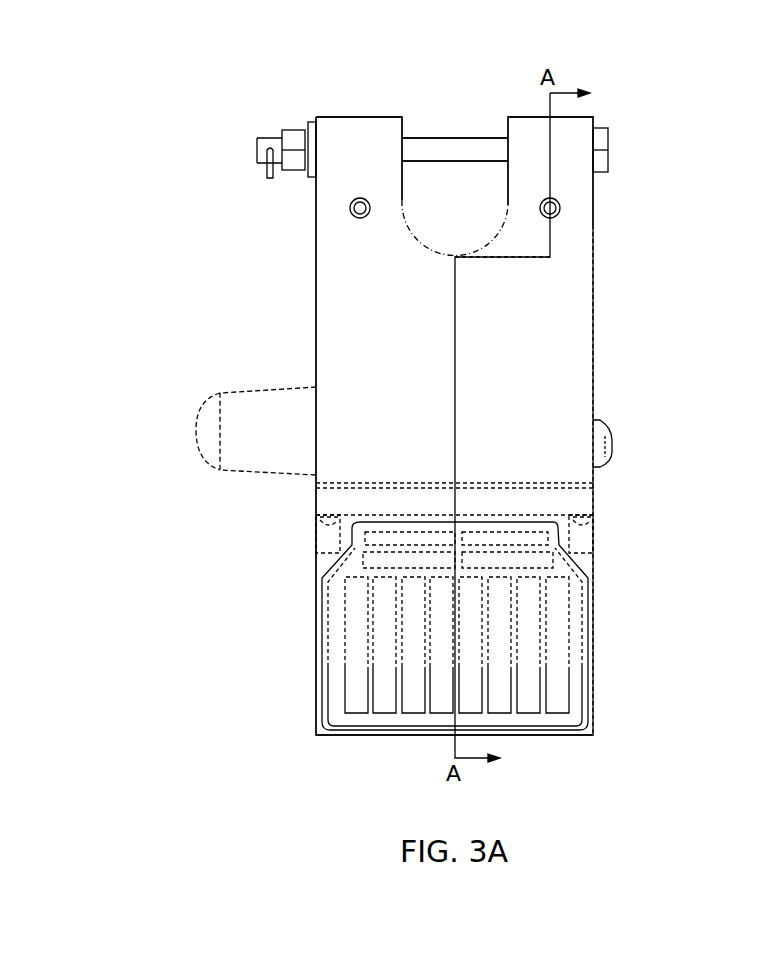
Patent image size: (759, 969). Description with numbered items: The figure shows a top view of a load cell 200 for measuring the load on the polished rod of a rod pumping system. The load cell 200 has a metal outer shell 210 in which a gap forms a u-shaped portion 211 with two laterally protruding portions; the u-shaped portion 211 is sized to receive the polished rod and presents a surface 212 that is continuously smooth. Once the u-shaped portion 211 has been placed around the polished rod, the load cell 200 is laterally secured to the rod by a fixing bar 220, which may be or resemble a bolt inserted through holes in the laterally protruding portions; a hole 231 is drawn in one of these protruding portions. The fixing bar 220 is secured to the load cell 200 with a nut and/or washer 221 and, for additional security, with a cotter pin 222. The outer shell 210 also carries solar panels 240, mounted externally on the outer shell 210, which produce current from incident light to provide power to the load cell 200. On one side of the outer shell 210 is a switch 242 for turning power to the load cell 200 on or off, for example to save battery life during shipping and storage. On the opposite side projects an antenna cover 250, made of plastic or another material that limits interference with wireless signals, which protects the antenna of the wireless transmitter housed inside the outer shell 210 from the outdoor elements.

The load cell 200 is at (258, 744).
The outer shell 210 is at (578, 375).
The u-shaped portion 211 is at (478, 226).
The surface 212 is at (497, 240).
The fixing bar 220 is at (447, 148).
The nut and/or washer 221 is at (298, 105).
The cotter pin 222 is at (268, 178).
The hole 231 is at (352, 216).
The solar panel 240 is at (578, 608).
The switch 242 is at (612, 437).
The antenna cover 250 is at (282, 447).